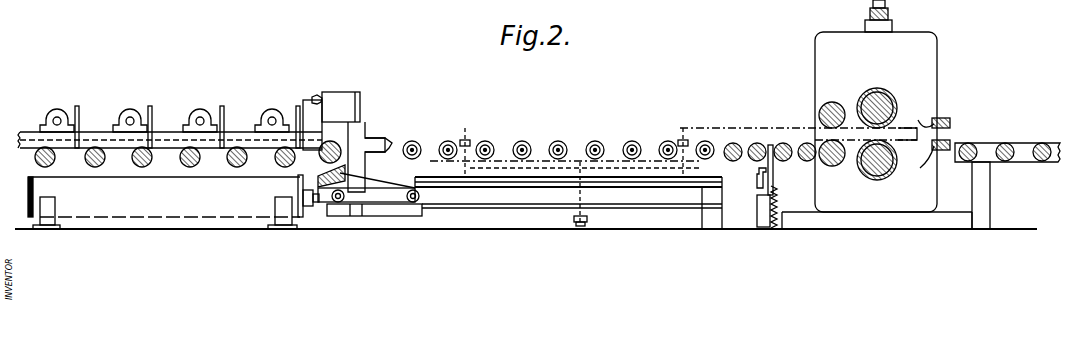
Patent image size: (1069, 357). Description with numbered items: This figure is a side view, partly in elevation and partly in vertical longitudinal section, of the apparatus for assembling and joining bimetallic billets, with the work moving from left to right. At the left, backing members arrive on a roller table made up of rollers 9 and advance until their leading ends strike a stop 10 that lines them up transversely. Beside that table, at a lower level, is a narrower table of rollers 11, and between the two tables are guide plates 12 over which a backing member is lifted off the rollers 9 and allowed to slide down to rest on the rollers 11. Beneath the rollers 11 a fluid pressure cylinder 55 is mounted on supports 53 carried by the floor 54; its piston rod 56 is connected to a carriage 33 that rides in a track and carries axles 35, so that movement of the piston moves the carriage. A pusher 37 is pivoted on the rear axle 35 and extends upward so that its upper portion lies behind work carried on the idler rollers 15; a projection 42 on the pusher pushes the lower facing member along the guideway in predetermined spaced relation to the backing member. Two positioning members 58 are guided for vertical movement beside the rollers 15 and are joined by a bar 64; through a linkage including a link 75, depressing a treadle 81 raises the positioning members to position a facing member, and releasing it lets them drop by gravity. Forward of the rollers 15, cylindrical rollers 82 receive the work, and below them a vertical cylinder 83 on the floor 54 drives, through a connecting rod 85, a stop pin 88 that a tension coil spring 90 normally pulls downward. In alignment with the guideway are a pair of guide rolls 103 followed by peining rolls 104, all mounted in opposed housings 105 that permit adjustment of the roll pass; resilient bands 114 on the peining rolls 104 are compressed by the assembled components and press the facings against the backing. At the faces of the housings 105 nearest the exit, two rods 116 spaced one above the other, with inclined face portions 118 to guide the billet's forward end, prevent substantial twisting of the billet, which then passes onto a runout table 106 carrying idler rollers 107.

The rollers 9 is at (57, 111).
The guide plates 12 is at (79, 107).
The rollers 11 is at (53, 162).
The stop 10 is at (312, 97).
The fluid pressure cylinder 55 is at (165, 196).
The floor 54 is at (174, 230).
The supports 53 is at (48, 226).
The piston rod 56 is at (315, 207).
The pusher 37 is at (360, 168).
The projection 42 is at (386, 141).
The carriage 33 is at (376, 217).
The axles 35 is at (340, 203).
The bar 64 is at (511, 178).
The link 75 is at (587, 197).
The treadle 81 is at (579, 226).
The positioning members 58 is at (468, 133).
The idler rollers 15 is at (557, 142).
The cylindrical rollers 82 is at (757, 143).
The stop pin 88 is at (774, 152).
The connecting rod 85 is at (759, 172).
The tension coil spring 90 is at (777, 210).
The cylinder 83 is at (758, 214).
The housings 105 is at (939, 40).
The guide rolls 103 is at (821, 108).
The peining rolls 104 is at (878, 88).
The bands 114 is at (894, 100).
The inclined central face portions 118 is at (918, 119).
The rods 116 is at (944, 118).
The runout table 106 is at (985, 142).
The idler rollers 107 is at (1042, 142).